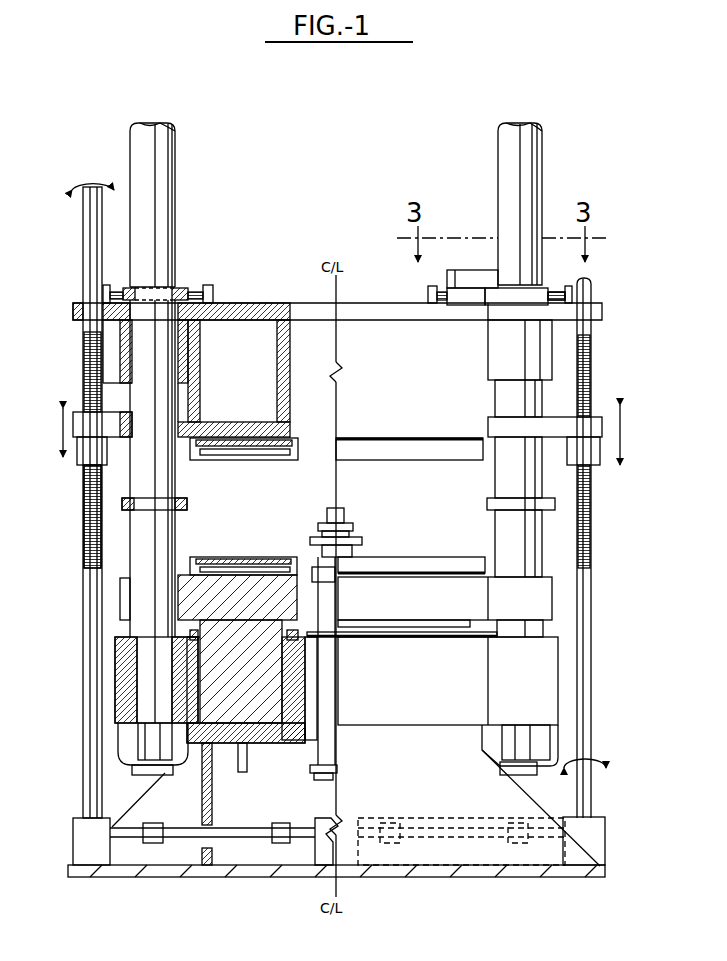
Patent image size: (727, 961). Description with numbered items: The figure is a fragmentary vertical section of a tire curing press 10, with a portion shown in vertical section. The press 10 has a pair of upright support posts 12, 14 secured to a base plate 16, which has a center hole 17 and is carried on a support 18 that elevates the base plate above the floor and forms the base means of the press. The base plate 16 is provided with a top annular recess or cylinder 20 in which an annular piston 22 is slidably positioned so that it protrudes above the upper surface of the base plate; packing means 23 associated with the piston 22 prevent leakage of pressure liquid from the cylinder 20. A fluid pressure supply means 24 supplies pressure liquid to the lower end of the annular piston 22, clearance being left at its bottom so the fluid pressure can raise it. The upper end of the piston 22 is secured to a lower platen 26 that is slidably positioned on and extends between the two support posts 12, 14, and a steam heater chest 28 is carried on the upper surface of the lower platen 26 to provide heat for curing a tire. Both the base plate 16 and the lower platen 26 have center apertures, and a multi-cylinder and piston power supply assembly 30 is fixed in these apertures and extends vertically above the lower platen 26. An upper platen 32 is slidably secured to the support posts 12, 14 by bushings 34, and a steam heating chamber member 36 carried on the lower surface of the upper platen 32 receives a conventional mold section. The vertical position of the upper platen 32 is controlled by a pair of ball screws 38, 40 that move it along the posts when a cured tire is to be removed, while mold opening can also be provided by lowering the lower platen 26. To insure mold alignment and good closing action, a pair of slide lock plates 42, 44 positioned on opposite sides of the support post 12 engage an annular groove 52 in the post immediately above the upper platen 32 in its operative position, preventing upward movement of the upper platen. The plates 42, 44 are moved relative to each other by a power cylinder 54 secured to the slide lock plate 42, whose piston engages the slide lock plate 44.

The tire curing press 10 is at (237, 298).
The upright support post 12 is at (160, 187).
The upright support post 14 is at (508, 190).
The base plate 16 is at (118, 690).
The center hole 17 is at (300, 684).
The support 18 is at (212, 797).
The annular cylinder 20 is at (272, 735).
The annular piston 22 is at (247, 686).
The packing means 23 is at (293, 630).
The fluid pressure supply means 24 is at (247, 770).
The lower platen 26 is at (120, 596).
The steam heater chest 28 is at (255, 560).
The multi-cylinder and piston power supply assembly 30 is at (352, 522).
The upper platen 32 is at (265, 303).
The bushings 34 is at (118, 384).
The steam heating chamber member 36 is at (258, 462).
The ball screw 38 is at (88, 488).
The ball screw 40 is at (588, 488).
The slide lock plate 42 is at (487, 305).
The slide lock plate 44 is at (548, 292).
The annular groove 52 is at (177, 288).
The power cylinder 54 is at (468, 270).